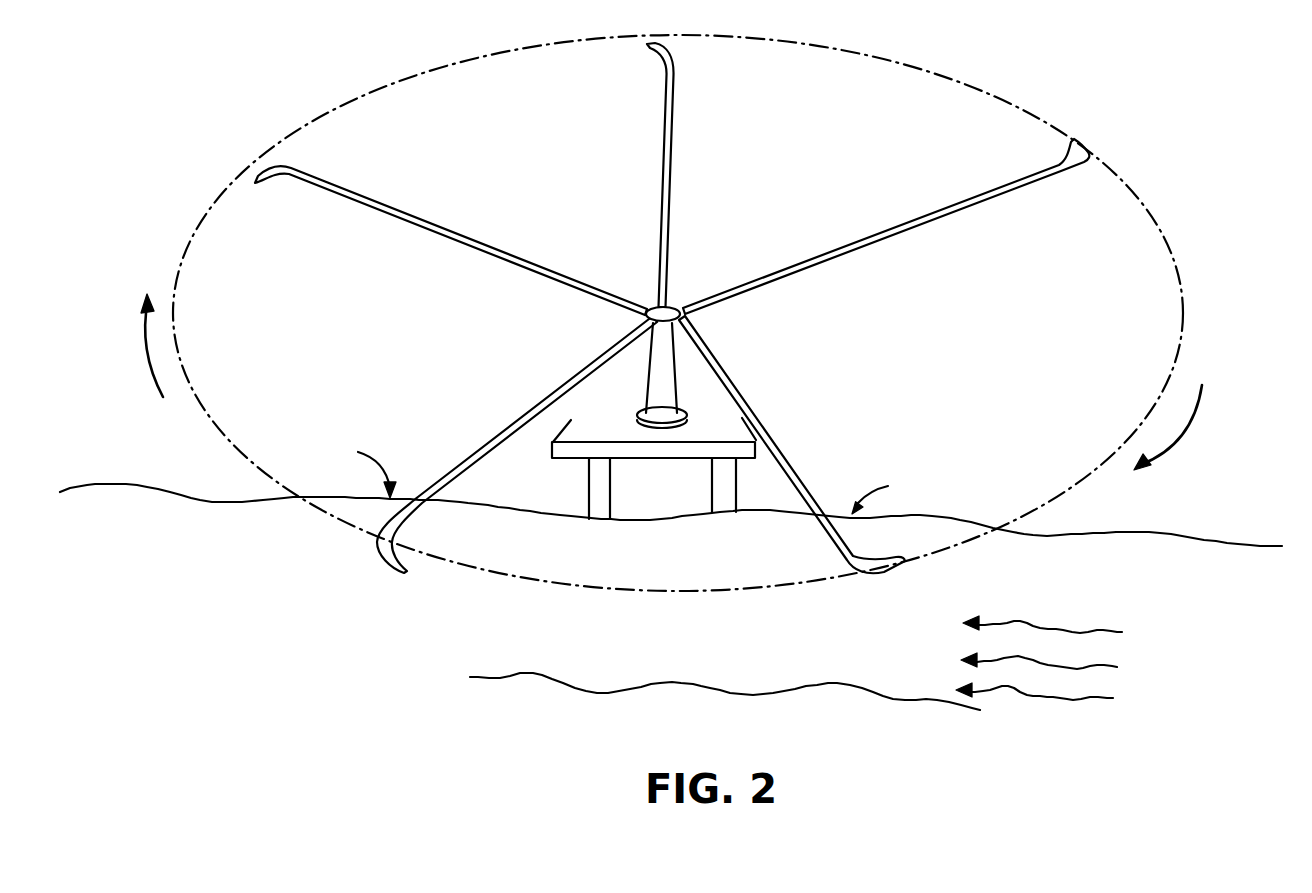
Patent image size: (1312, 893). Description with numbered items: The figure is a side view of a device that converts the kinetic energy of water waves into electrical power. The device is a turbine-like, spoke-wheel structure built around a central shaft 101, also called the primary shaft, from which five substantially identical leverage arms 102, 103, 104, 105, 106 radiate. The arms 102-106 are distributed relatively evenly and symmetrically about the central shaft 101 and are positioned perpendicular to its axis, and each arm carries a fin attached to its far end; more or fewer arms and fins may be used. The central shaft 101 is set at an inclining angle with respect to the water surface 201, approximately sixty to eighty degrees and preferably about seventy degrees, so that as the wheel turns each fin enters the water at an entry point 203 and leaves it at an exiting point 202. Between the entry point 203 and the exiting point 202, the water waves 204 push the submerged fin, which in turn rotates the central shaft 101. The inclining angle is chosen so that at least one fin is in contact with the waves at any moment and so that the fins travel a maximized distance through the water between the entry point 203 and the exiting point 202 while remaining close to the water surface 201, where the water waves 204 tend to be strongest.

The central shaft 101 is at (653, 370).
The arm 102 is at (503, 425).
The arm 103 is at (797, 460).
The arm 104 is at (878, 245).
The arm 105 is at (678, 158).
The arm 106 is at (473, 238).
The water surface 201 is at (1229, 541).
The exiting point 202 is at (357, 468).
The entry point 203 is at (890, 495).
The water waves 204 is at (1188, 682).